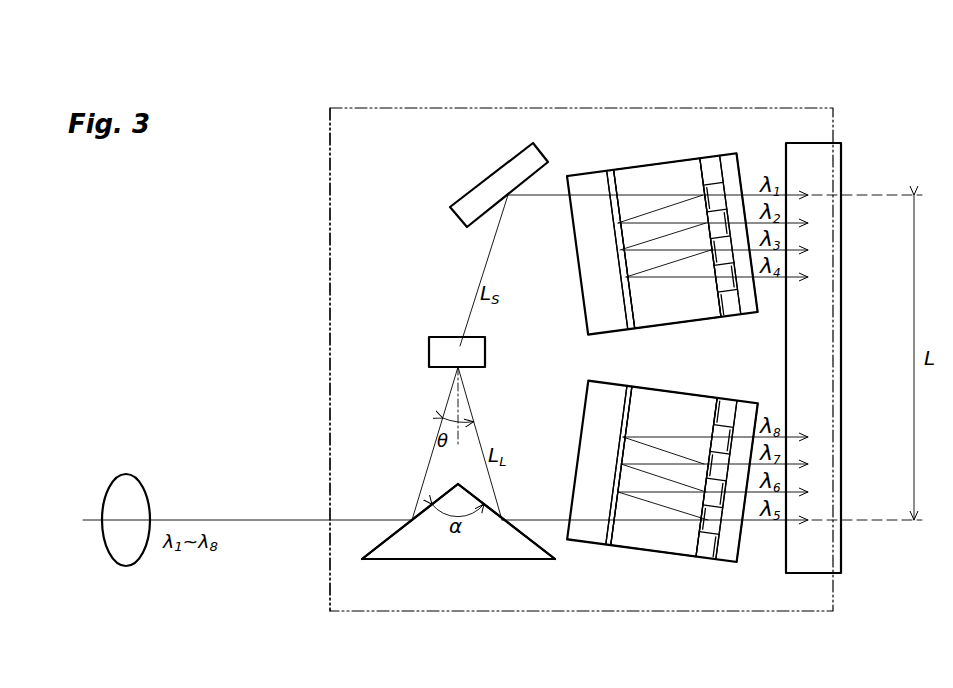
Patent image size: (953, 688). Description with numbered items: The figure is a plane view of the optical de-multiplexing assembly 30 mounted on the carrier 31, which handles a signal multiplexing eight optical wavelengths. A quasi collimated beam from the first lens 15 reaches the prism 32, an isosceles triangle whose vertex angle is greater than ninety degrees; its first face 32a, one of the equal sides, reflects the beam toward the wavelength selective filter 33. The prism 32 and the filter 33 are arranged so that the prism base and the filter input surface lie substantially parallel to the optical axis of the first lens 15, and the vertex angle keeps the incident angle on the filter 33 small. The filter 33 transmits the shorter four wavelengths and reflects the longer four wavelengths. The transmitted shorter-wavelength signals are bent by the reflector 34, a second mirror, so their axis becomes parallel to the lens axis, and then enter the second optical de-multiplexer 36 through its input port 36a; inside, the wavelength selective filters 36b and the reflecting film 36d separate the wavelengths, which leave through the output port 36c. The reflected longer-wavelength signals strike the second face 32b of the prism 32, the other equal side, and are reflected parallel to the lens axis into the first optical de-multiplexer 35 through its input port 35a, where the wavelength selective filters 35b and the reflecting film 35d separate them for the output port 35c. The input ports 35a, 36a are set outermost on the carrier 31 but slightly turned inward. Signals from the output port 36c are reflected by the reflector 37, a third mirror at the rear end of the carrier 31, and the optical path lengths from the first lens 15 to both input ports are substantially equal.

The first lens 15 is at (127, 475).
The optical de-multiplexing assembly 30 is at (372, 88).
The carrier 31 is at (352, 218).
The prism 32 is at (430, 560).
The first face 32a is at (392, 532).
The second face 32b is at (525, 532).
The wavelength selective filter 33 is at (428, 352).
The reflector 34 is at (465, 196).
The first optical de-multiplexer 35 is at (585, 545).
The input port 35a is at (617, 538).
The wavelength selective filters 35b is at (724, 515).
The output port 35c is at (728, 520).
The reflecting film 35d is at (633, 400).
The second optical de-multiplexer 36 is at (584, 178).
The input port 36a is at (608, 206).
The wavelength selective filters 36b is at (722, 245).
The output port 36c is at (752, 300).
The reflecting film 36d is at (622, 300).
The reflector 37 is at (845, 362).